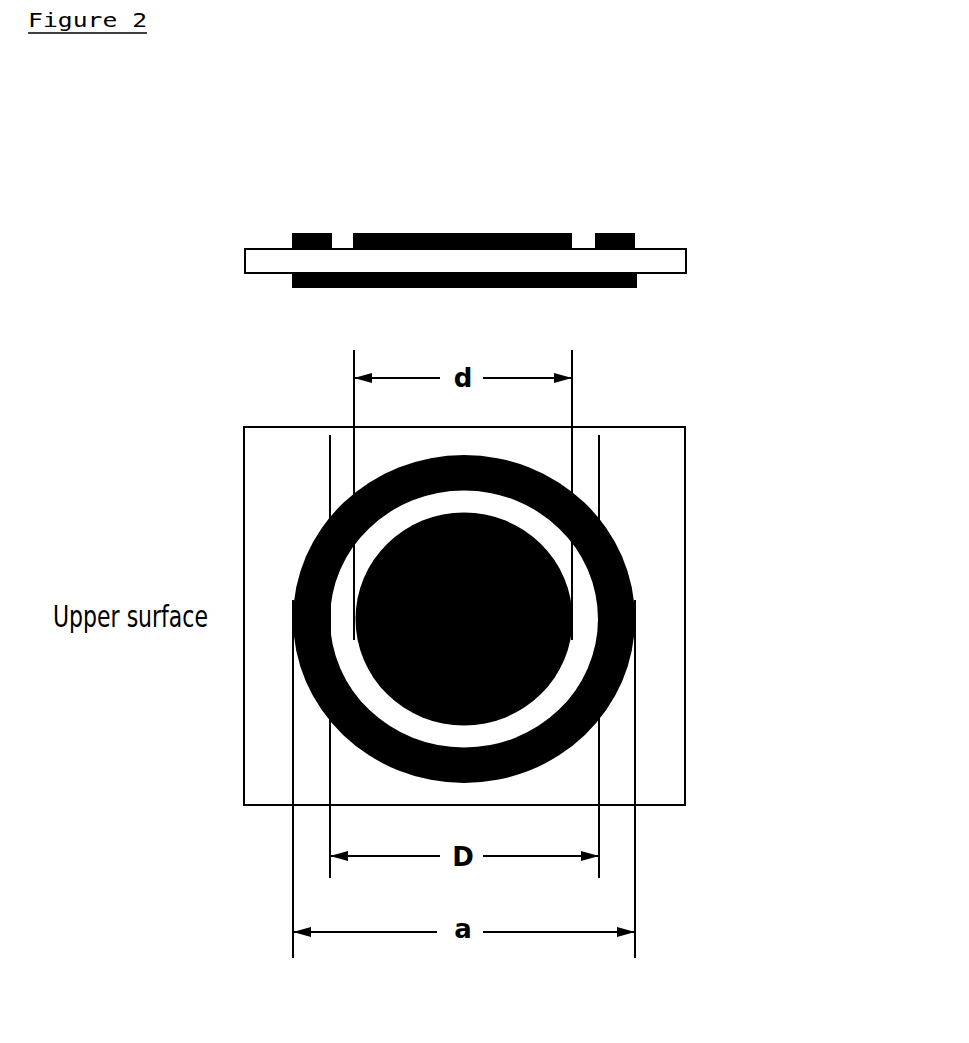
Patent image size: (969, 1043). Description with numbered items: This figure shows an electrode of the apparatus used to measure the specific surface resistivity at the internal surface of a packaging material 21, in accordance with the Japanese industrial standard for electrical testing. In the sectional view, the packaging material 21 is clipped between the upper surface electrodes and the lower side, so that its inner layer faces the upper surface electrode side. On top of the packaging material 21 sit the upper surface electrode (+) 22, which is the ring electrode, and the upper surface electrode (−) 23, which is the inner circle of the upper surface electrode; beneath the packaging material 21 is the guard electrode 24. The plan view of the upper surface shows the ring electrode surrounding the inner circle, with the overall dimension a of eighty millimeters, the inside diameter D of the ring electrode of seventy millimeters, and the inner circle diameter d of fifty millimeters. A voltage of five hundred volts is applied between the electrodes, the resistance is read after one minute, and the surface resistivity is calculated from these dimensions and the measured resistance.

The packaging material 21 is at (695, 248).
The upper surface electrode (+) 22 is at (602, 220).
The upper surface electrode (−) 23 is at (463, 225).
The guard electrode 24 is at (607, 297).